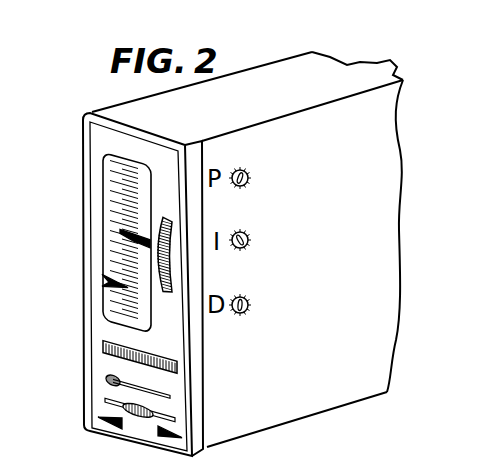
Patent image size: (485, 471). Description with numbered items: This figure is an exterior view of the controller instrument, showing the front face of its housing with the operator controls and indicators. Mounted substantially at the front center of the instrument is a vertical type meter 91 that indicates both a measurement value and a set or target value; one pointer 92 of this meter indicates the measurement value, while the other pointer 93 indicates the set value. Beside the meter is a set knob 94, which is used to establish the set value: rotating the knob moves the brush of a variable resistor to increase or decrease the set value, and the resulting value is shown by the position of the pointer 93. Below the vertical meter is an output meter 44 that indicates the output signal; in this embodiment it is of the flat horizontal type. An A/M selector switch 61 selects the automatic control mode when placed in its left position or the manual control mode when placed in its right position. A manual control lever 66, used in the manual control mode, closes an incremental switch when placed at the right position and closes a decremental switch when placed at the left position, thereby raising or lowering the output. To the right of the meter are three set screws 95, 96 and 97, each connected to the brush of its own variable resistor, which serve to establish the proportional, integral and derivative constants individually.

The output meter 44 is at (103, 346).
The A/M selector switch 61 is at (106, 380).
The manual control lever 66 is at (130, 407).
The vertical type meter 91 is at (108, 185).
The pointer 92 is at (112, 280).
The pointer 93 is at (120, 232).
The set knob 94 is at (170, 257).
The set screw 95 is at (250, 181).
The set screw 96 is at (250, 243).
The set screw 97 is at (250, 308).